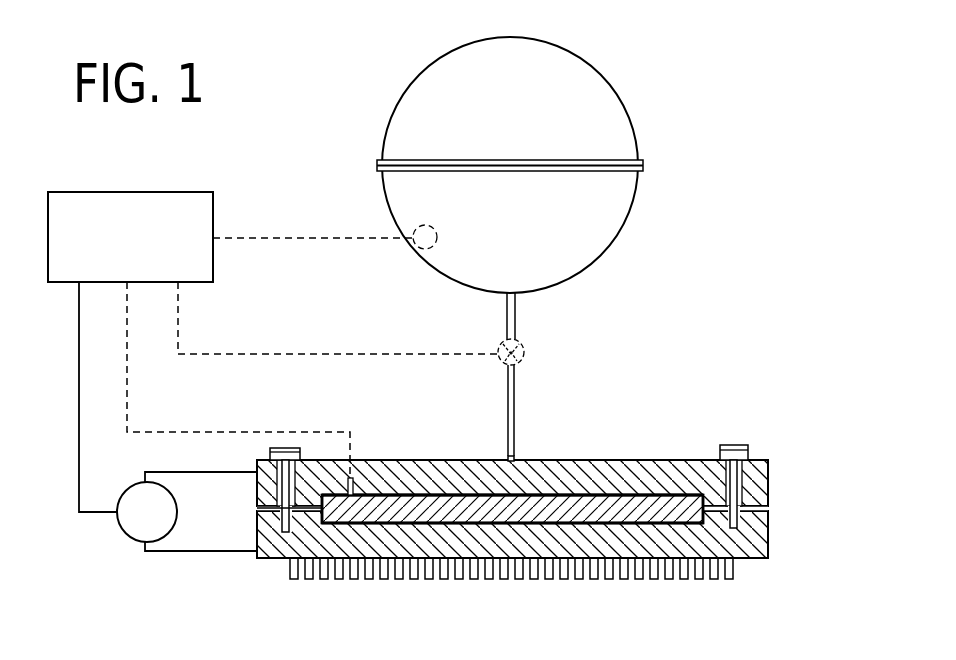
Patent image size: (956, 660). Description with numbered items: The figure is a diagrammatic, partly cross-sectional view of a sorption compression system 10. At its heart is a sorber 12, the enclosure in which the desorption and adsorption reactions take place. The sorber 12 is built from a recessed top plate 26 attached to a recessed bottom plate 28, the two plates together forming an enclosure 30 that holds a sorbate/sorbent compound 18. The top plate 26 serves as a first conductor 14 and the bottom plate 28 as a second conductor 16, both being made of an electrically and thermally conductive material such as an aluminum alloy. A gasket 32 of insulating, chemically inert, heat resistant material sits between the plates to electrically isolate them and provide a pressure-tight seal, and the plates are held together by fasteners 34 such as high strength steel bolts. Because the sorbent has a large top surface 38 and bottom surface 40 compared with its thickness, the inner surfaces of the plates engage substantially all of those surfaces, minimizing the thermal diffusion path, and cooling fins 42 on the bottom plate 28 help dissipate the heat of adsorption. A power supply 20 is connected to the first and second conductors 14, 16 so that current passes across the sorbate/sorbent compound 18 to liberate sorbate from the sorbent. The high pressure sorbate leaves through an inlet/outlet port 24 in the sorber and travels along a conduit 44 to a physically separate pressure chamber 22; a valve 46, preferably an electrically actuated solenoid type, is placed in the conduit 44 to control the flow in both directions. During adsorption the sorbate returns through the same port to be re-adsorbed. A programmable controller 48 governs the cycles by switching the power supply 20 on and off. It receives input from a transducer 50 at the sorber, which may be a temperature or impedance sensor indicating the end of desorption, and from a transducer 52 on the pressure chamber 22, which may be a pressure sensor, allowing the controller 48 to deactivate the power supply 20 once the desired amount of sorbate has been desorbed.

The sorption compression system 10 is at (672, 69).
The sorber 12 is at (626, 453).
The first conductor 14 is at (768, 474).
The second conductor 16 is at (768, 540).
The sorbate/sorbent compound 18 is at (567, 494).
The power supply 20 is at (166, 526).
The pressure chamber 22 is at (526, 122).
The inlet/outlet port 24 is at (516, 458).
The top plate 26 is at (671, 459).
The bottom plate 28 is at (746, 559).
The enclosure 30 is at (358, 516).
The gasket 32 is at (768, 508).
The fasteners 34 is at (747, 448).
The top surface 38 is at (470, 495).
The bottom surface 40 is at (492, 524).
The cooling fins 42 is at (668, 579).
The conduit 44 is at (516, 386).
The valve 46 is at (523, 346).
The programmable controller 48 is at (146, 256).
The transducer 50 is at (367, 466).
The transducer 52 is at (437, 231).